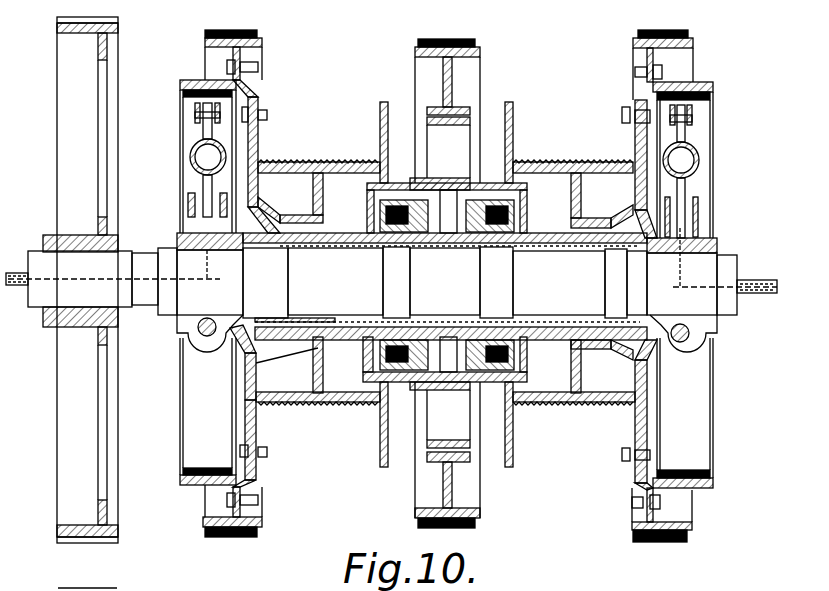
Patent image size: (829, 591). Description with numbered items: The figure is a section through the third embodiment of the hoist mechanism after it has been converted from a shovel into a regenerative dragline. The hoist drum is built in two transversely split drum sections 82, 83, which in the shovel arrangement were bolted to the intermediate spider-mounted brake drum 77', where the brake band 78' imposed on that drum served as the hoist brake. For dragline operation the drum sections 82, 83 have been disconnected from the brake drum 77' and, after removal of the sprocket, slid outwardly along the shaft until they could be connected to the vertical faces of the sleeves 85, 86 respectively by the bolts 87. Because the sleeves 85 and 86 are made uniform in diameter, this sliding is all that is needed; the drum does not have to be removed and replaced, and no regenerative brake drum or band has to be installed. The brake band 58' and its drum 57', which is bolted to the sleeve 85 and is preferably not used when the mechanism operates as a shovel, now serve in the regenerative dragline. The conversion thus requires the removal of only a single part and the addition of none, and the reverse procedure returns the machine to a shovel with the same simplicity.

The brake band 58' is at (237, 304).
The brake band 78' is at (451, 307).
The brake drum 77' is at (473, 272).
The bolts 87 is at (267, 115).
The drum section 82 is at (312, 161).
The drum section 83 is at (545, 161).
The sleeve 85 is at (342, 222).
The sleeve 86 is at (553, 226).
The drum 57' is at (276, 577).